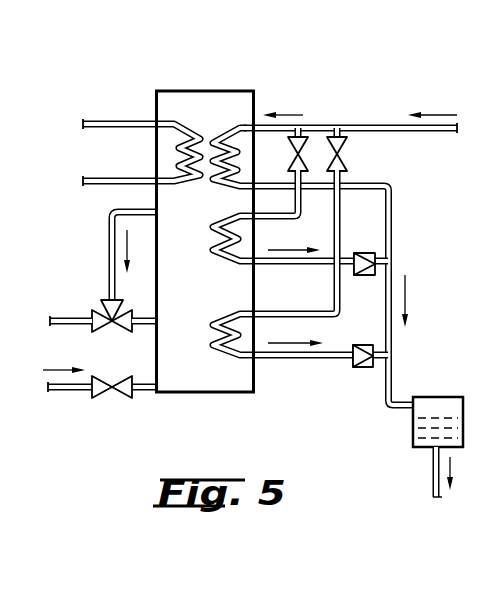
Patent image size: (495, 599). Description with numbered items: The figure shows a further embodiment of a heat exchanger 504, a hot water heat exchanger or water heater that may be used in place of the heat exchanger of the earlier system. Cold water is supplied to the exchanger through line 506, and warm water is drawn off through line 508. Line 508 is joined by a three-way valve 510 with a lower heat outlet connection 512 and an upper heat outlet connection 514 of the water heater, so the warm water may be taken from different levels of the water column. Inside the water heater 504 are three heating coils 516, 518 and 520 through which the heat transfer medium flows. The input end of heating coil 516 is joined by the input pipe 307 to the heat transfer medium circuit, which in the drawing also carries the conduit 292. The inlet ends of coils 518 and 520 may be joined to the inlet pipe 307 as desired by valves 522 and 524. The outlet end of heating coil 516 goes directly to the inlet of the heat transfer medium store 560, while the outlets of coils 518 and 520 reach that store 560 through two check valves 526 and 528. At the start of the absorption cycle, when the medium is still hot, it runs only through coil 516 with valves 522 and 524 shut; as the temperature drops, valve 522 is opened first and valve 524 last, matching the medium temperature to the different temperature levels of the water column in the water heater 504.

The conduit 292 is at (114, 120).
The input pipe 307 is at (423, 134).
The heat exchanger 504 is at (173, 102).
The line 506 is at (76, 391).
The line 508 is at (65, 316).
The three-way valve 510 is at (104, 308).
The lower heat outlet connection 512 is at (142, 327).
The upper heat outlet connection 514 is at (108, 228).
The heating coil 516 is at (225, 118).
The heating coil 518 is at (222, 259).
The heating coil 520 is at (222, 354).
The valve 522 is at (311, 146).
The valve 524 is at (343, 160).
The check valve 526 is at (367, 252).
The check valve 528 is at (363, 368).
The heat transfer medium store 560 is at (448, 396).